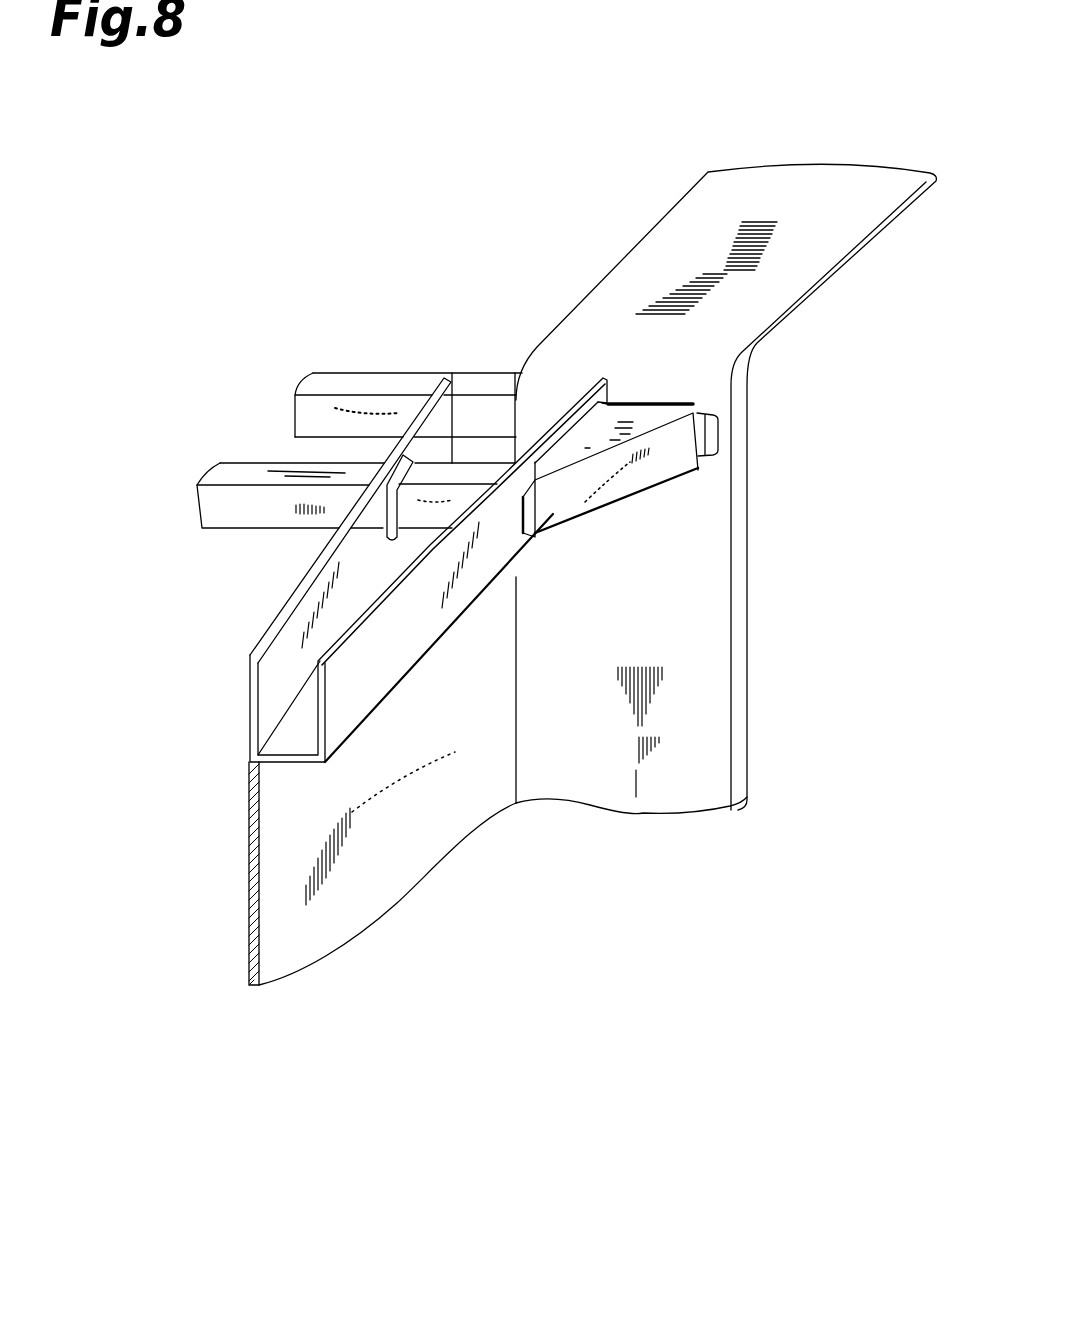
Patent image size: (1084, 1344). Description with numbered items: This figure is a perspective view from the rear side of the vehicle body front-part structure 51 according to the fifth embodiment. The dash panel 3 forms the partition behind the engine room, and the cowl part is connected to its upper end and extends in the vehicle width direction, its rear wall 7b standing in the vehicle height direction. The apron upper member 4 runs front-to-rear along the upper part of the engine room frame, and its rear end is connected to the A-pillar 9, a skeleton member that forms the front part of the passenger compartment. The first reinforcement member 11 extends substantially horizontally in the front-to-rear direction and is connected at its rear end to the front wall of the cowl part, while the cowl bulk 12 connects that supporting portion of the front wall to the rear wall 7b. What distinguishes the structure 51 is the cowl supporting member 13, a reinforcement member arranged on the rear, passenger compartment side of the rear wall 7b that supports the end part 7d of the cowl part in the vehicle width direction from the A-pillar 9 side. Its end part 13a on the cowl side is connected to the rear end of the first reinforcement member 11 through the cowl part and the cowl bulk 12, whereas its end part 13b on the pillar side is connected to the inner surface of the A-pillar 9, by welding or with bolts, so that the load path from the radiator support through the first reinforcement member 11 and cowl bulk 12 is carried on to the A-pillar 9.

The dash panel 3 is at (297, 850).
The apron upper member 4 is at (373, 373).
The rear wall 7b is at (420, 625).
The end part of the cowl part 7d is at (578, 395).
The front body pillar upper reinforcement (A-pillar) 9 is at (753, 293).
The first reinforcement member 11 is at (277, 508).
The cowl bulk 12 is at (468, 475).
The cowl supporting member 13 is at (615, 489).
The end part of the cowl supporting member on the cowl part side 13a is at (550, 512).
The end part of the cowl supporting member on the A-pillar side 13b is at (678, 452).
The vehicle body front-part structure 51 is at (512, 1105).